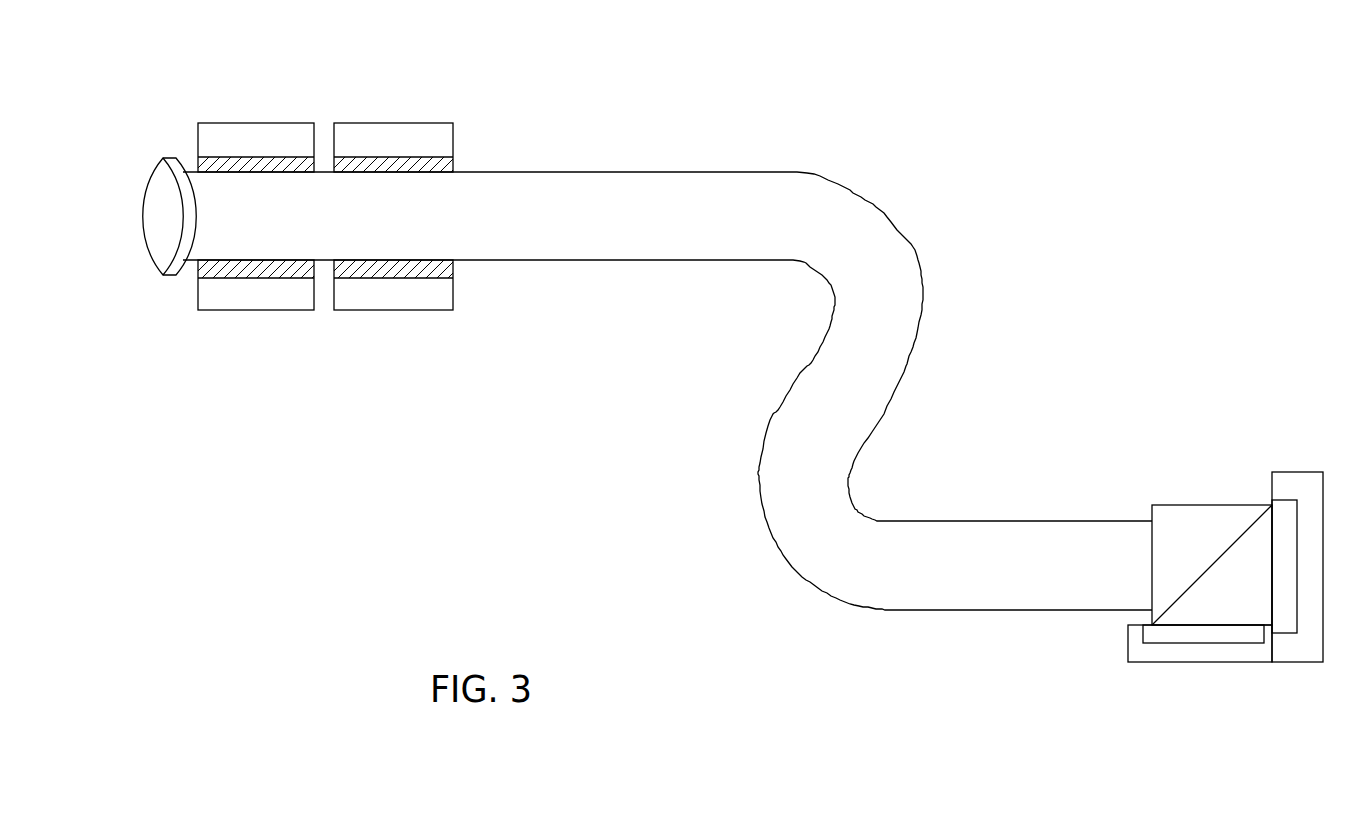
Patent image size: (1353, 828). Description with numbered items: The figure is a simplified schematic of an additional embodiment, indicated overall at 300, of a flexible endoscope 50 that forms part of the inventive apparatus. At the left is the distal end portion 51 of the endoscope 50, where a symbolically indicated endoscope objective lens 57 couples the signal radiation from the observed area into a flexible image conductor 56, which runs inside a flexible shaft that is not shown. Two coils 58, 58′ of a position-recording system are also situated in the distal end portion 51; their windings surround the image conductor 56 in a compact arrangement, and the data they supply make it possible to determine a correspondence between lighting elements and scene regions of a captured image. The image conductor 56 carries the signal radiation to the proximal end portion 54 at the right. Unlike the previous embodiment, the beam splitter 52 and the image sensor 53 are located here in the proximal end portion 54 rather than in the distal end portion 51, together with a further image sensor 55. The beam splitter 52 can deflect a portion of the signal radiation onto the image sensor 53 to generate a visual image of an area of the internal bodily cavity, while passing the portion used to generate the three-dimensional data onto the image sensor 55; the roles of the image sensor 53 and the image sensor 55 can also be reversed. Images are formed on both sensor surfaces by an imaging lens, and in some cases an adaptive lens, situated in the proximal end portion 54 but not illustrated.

The optical system 300 is at (1174, 86).
The flexible endoscope 50 is at (652, 358).
The distal end portion 51 is at (294, 376).
The beam splitter 52 is at (1215, 515).
The image sensor 53 is at (1178, 637).
The proximal end portion 54 is at (1273, 393).
The image sensor 55 is at (1283, 623).
The flexible image conductor 56 is at (607, 183).
The endoscope objective lens 57 is at (162, 165).
The coil 58 is at (255, 132).
The coil 58′ is at (393, 132).